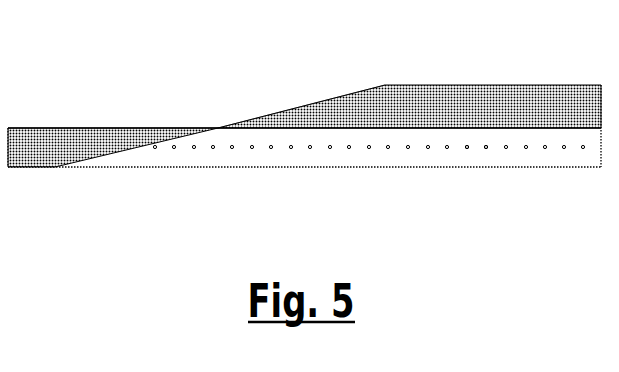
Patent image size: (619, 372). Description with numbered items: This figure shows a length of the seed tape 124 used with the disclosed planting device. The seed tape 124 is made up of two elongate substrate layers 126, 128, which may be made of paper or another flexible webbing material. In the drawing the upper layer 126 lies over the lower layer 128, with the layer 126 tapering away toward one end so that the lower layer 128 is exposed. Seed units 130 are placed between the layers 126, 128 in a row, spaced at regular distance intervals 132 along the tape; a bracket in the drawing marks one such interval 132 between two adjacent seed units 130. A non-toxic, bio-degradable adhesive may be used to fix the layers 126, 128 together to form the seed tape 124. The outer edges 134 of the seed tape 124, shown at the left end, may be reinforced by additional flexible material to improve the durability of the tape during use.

The seed tape 124 is at (338, 56).
The elongate substrate layer 126 is at (579, 86).
The elongate substrate layer 128 is at (592, 168).
The seed units 130 is at (331, 150).
The regular distance intervals 132 is at (467, 150).
The outer edges 134 is at (40, 128).